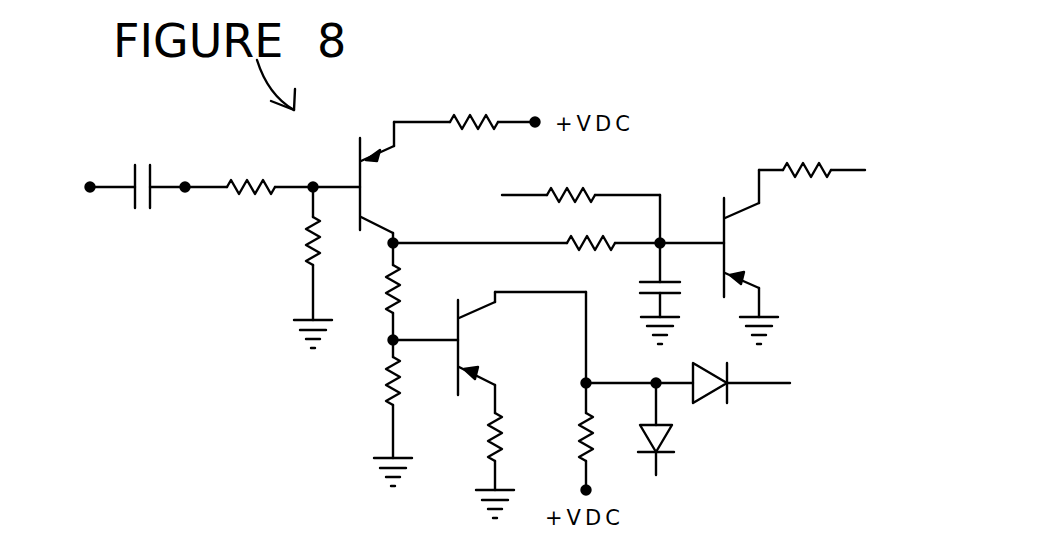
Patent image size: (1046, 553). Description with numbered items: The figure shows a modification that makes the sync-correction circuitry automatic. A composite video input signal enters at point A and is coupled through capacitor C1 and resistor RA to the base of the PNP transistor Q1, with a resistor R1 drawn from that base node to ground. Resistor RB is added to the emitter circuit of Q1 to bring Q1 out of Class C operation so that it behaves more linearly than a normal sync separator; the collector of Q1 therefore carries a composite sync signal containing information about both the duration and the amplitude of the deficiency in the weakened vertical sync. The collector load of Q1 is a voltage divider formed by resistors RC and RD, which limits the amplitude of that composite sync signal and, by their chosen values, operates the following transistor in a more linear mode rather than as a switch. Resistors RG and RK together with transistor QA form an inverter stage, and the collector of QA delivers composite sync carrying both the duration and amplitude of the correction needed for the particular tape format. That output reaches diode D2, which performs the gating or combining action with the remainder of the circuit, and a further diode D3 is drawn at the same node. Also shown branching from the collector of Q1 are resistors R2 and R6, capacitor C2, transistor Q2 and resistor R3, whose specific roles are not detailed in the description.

The point A is at (111, 156).
The coupling capacitor C1 is at (157, 169).
The base resistor RA is at (251, 169).
The bias resistor to ground R1 is at (292, 233).
The PNP transistor Q1 is at (386, 182).
The emitter resistor RB is at (464, 141).
The resistor R6 is at (581, 203).
The resistor R2 is at (526, 259).
The capacitor C2 is at (674, 293).
The PNP transistor Q2 is at (757, 257).
The collector resistor of Q2 R3 is at (812, 157).
The collector load divider resistor RC is at (416, 291).
The collector load divider resistor RD is at (377, 413).
The inverter transistor QA is at (522, 352).
The inverter stage resistor RG is at (481, 465).
The inverter stage resistor RK is at (566, 436).
The gating diode D2 is at (736, 373).
The diode D3 is at (682, 436).